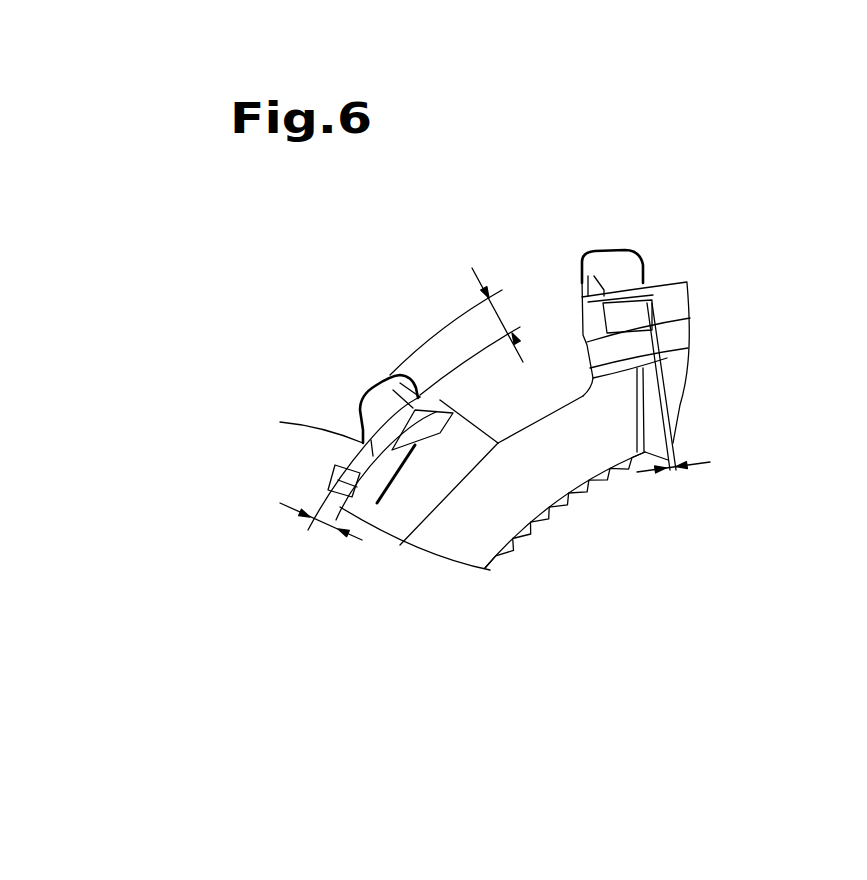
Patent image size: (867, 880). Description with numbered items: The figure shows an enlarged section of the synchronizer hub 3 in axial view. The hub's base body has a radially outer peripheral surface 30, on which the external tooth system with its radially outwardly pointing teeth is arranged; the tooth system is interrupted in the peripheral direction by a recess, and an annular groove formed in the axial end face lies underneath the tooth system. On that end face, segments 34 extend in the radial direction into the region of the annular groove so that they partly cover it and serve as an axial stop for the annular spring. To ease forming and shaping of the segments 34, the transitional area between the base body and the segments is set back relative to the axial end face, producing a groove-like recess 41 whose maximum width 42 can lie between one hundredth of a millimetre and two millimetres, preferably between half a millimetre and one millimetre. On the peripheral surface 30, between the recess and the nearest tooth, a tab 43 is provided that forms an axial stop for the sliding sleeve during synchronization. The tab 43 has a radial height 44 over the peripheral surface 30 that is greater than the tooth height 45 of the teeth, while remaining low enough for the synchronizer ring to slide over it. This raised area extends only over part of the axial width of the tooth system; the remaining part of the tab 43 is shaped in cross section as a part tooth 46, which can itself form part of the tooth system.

The synchronizer hub 3 is at (493, 208).
The peripheral surface 30 is at (378, 452).
The segments 34 is at (410, 443).
The groove-like recess 41 is at (660, 303).
The maximum width 42 is at (672, 478).
The tab 43 is at (625, 243).
The radial height 44 is at (508, 307).
The tooth height 45 is at (311, 530).
The part tooth 46 is at (417, 385).